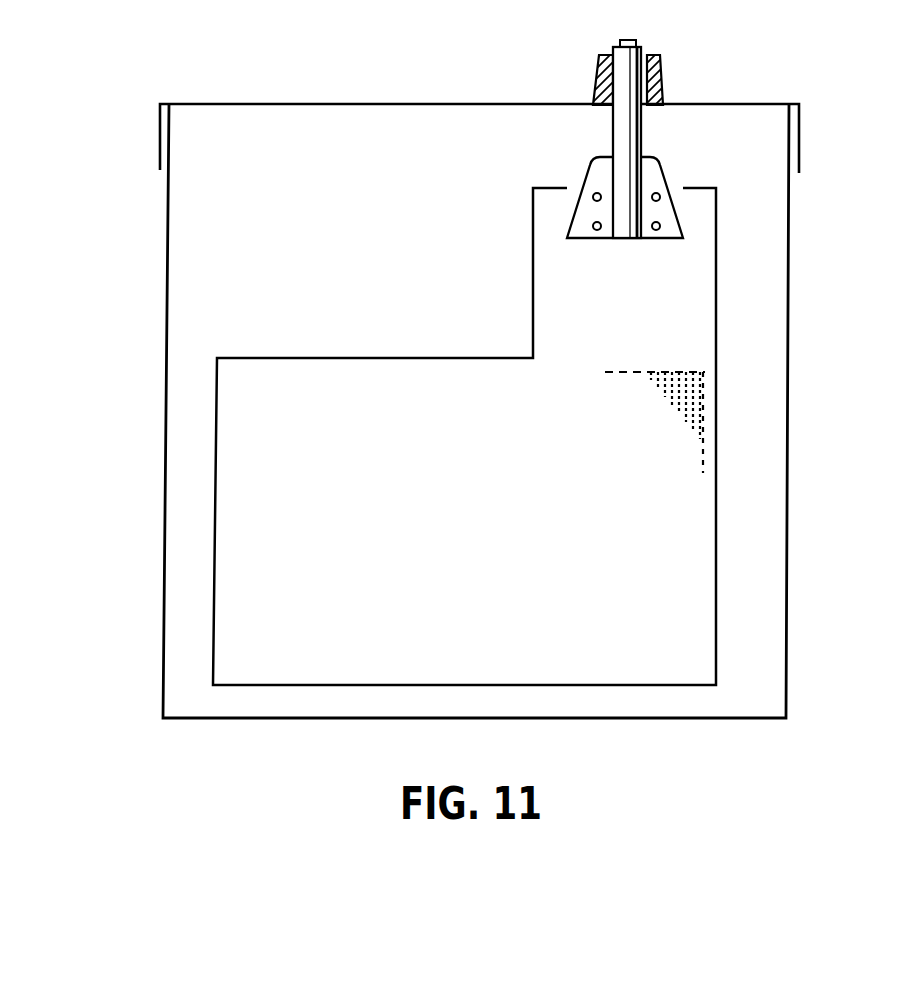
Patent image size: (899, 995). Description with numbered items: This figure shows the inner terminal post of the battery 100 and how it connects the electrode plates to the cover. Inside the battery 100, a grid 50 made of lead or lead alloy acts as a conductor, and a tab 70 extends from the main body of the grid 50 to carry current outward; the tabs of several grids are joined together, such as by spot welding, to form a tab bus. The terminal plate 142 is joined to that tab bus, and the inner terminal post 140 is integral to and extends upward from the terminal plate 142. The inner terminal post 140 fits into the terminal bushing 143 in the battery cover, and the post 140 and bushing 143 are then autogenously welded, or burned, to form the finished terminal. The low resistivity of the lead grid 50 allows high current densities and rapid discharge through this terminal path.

The grid 50 is at (727, 512).
The tab 70 is at (692, 300).
The battery 100 is at (786, 582).
The inner terminal post 140 is at (623, 83).
The terminal plate 142 is at (657, 173).
The terminal bushing 143 is at (660, 63).